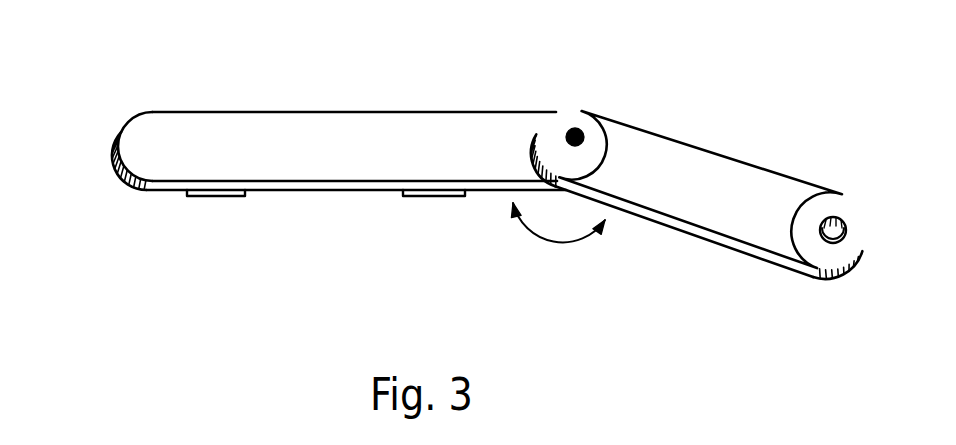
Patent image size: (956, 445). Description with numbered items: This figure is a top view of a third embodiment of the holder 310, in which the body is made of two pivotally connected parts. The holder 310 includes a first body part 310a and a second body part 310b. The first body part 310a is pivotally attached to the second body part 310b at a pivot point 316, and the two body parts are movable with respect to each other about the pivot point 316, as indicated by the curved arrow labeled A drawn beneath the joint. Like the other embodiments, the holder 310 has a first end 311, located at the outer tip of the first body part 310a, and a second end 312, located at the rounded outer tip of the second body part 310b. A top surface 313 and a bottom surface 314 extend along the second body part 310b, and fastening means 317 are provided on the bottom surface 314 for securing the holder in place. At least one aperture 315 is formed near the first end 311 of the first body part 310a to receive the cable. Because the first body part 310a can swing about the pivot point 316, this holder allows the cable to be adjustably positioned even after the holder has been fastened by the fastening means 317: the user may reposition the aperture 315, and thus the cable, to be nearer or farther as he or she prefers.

The holder 310 is at (456, 96).
The first body part 310a is at (696, 177).
The second body part 310b is at (309, 135).
The first end 311 is at (852, 266).
The second end 312 is at (113, 155).
The top surface 313 is at (170, 135).
The bottom surface 314 is at (317, 190).
The aperture 315 is at (830, 216).
The pivot point 316 is at (579, 129).
The fastening means 317 is at (216, 196).